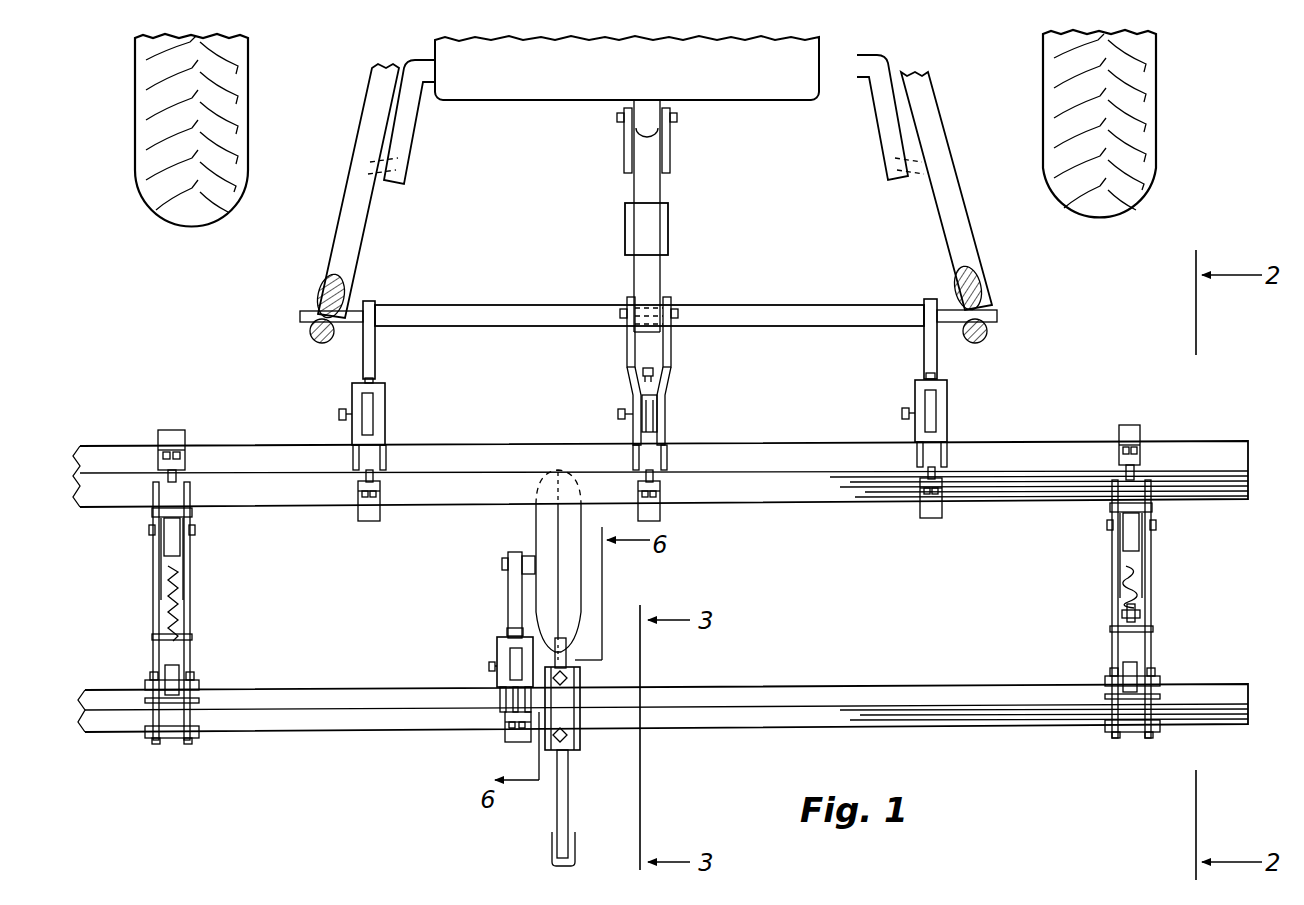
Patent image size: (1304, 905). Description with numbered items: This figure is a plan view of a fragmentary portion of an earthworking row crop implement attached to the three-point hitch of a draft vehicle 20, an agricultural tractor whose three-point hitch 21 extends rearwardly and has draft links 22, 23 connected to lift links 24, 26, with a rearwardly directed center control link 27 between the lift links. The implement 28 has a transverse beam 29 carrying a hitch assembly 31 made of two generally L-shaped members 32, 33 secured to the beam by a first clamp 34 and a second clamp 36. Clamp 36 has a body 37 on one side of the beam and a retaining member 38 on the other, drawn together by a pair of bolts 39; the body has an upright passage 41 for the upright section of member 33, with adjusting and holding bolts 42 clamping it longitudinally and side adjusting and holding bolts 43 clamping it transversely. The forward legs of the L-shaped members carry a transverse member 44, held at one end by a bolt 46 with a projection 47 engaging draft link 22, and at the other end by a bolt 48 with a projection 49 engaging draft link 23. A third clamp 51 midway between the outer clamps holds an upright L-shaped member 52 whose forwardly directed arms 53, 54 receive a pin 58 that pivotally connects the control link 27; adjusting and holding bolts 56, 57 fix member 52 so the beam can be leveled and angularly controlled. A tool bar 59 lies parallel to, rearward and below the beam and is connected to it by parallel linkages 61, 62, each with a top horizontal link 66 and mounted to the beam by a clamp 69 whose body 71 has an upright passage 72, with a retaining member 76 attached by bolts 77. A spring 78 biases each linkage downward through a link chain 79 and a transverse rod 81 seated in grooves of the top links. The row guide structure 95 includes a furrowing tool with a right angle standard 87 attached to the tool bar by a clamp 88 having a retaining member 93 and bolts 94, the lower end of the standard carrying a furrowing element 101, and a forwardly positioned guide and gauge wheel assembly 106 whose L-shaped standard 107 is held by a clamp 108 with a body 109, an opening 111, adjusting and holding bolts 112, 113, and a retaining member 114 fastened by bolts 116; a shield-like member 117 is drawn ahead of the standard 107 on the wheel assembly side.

The draft vehicle 20 is at (133, 210).
The three-point hitch 21 is at (325, 214).
The draft link 22 is at (350, 245).
The draft link 23 is at (940, 215).
The lift link 24 is at (415, 130).
The lift link 26 is at (890, 130).
The center control link 27 is at (657, 225).
The implement 28 is at (1090, 422).
The transverse beam 29 is at (1011, 502).
The hitch assembly 31 is at (342, 393).
The L-shaped member 32 is at (372, 356).
The L-shaped member 33 is at (932, 345).
The first clamp 34 is at (385, 420).
The second clamp 36 is at (912, 432).
The body 37 is at (947, 432).
The retaining member 38 is at (930, 512).
The bolts 39 is at (947, 460).
The upright passage 41 is at (936, 394).
The adjusting and holding bolts 42 is at (926, 368).
The side adjusting and holding bolts 43 is at (904, 410).
The transverse member 44 is at (820, 308).
The bolt 46 is at (353, 333).
The projection 47 is at (300, 318).
The bolt 48 is at (940, 312).
The projection 49 is at (998, 318).
The third clamp 51 is at (680, 405).
The upright L-shaped member 52 is at (652, 416).
The arm 53 is at (628, 356).
The arm 54 is at (672, 352).
The adjusting and holding bolt 56 is at (649, 368).
The adjusting and holding bolt 57 is at (618, 413).
The pin 58 is at (672, 315).
The tool bar 59 is at (318, 690).
The parallel linkage 61 is at (1095, 573).
The parallel linkage 62 is at (148, 597).
The top horizontal link 66 is at (1115, 645).
The clamp 69 is at (1108, 546).
The body 71 is at (158, 512).
The upright passage 72 is at (164, 553).
The retaining member 76 is at (1130, 437).
The bolts 77 is at (1148, 477).
The spring 78 is at (1138, 588).
The link chain 79 is at (1143, 612).
The transverse rod 81 is at (1153, 630).
The standard 87 is at (557, 810).
The clamp 88 is at (585, 738).
The retaining member 93 is at (580, 682).
The bolts 94 is at (565, 742).
The row guide structure 95 is at (437, 809).
The sweep foot 101 is at (550, 848).
The guide and gauge wheel assembly 106 is at (494, 537).
The standard 107 is at (512, 585).
The clamp 108 is at (494, 678).
The body 109 is at (500, 642).
The opening 111 is at (518, 654).
The adjusting and holding bolt 112 is at (510, 630).
The adjusting and holding bolt 113 is at (489, 666).
The retaining member 114 is at (512, 740).
The bolts 116 is at (505, 715).
The shield 117 is at (545, 520).